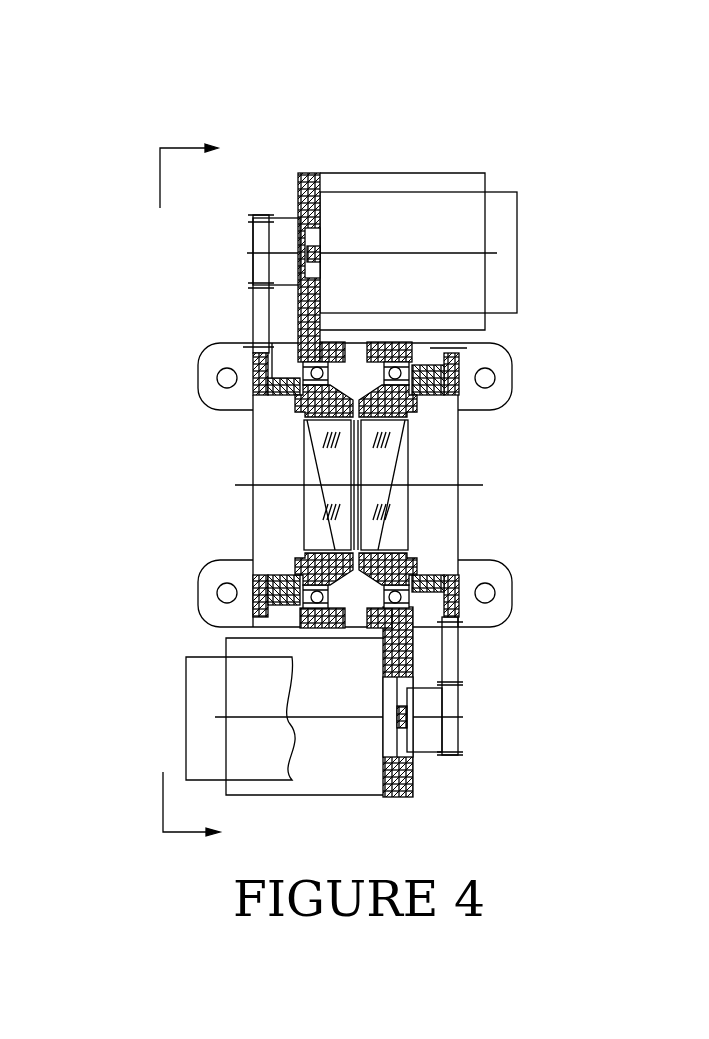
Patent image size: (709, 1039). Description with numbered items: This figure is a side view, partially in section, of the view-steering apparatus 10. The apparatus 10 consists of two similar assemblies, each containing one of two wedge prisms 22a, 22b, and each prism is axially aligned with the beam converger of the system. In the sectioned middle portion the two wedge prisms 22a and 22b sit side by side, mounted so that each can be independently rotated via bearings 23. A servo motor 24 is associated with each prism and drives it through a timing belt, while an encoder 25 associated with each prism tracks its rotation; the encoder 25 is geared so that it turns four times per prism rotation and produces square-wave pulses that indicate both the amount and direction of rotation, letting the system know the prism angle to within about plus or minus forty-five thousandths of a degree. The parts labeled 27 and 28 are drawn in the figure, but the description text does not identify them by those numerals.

The view-steering apparatus 10 is at (316, 140).
The wedge prism 22a is at (390, 497).
The wedge prism 22b is at (322, 497).
The bearings 23 is at (437, 393).
The servo motor 24 is at (518, 248).
The encoder 25 is at (360, 797).
The left bearing housing 27 is at (253, 368).
The shaft 28 is at (250, 258).